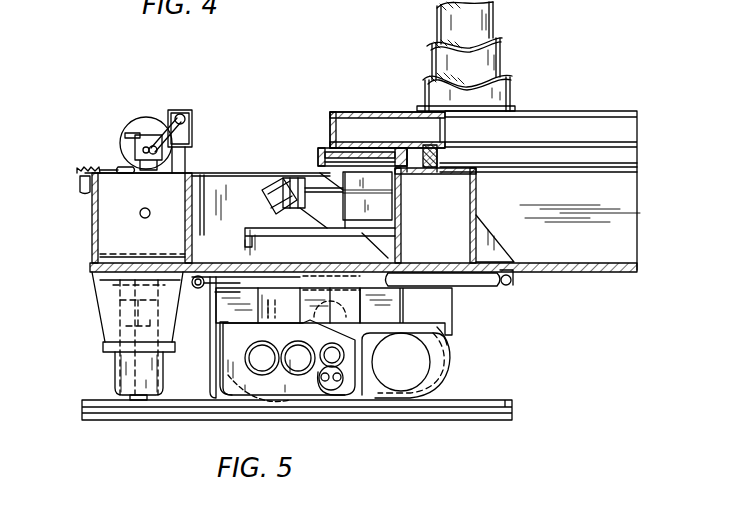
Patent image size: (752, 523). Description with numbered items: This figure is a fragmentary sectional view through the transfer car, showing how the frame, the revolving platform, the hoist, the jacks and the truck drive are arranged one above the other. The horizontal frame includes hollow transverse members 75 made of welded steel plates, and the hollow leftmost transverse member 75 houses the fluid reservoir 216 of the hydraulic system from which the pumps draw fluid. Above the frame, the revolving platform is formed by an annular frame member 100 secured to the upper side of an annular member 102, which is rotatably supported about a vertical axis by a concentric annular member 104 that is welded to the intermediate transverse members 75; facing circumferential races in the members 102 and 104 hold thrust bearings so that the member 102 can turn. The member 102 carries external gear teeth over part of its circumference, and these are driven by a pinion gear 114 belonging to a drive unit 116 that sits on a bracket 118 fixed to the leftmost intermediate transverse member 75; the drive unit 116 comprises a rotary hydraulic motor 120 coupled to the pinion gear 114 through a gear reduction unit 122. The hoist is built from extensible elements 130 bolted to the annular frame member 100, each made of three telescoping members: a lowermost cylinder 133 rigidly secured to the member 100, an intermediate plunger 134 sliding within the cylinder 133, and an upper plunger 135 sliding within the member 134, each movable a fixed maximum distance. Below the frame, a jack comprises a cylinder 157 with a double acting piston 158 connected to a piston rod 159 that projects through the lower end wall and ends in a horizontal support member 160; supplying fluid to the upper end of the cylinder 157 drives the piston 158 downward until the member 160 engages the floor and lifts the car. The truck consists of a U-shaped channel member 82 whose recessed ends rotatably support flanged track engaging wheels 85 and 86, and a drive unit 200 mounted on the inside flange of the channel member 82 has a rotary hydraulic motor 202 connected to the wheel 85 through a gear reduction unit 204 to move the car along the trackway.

The transverse member 75 is at (95, 253).
The U-shaped channel member 82 is at (440, 308).
The flanged track engaging wheel 85 is at (265, 402).
The flanged track engaging wheel 86 is at (443, 368).
The annular frame member 100 is at (330, 115).
The annular member 102 is at (408, 170).
The annular member 104 is at (440, 156).
The pinion gear 114 is at (316, 168).
The drive unit 116 is at (318, 172).
The bracket 118 is at (337, 232).
The rotary hydraulic motor 120 is at (273, 197).
The gear reduction unit 122 is at (375, 208).
The extensible element 130 is at (455, 56).
The cylinder 133 is at (510, 91).
The intermediate member 134 is at (507, 64).
The upper member 135 is at (495, 20).
The cylinder 157 is at (117, 368).
The double acting piston 158 is at (120, 292).
The piston rod 159 is at (133, 327).
The horizontal support member 160 is at (130, 399).
The drive unit 200 is at (337, 388).
The rotary hydraulic motor 202 is at (323, 380).
The gear reduction unit 204 is at (233, 388).
The fluid reservoir 216 is at (110, 227).